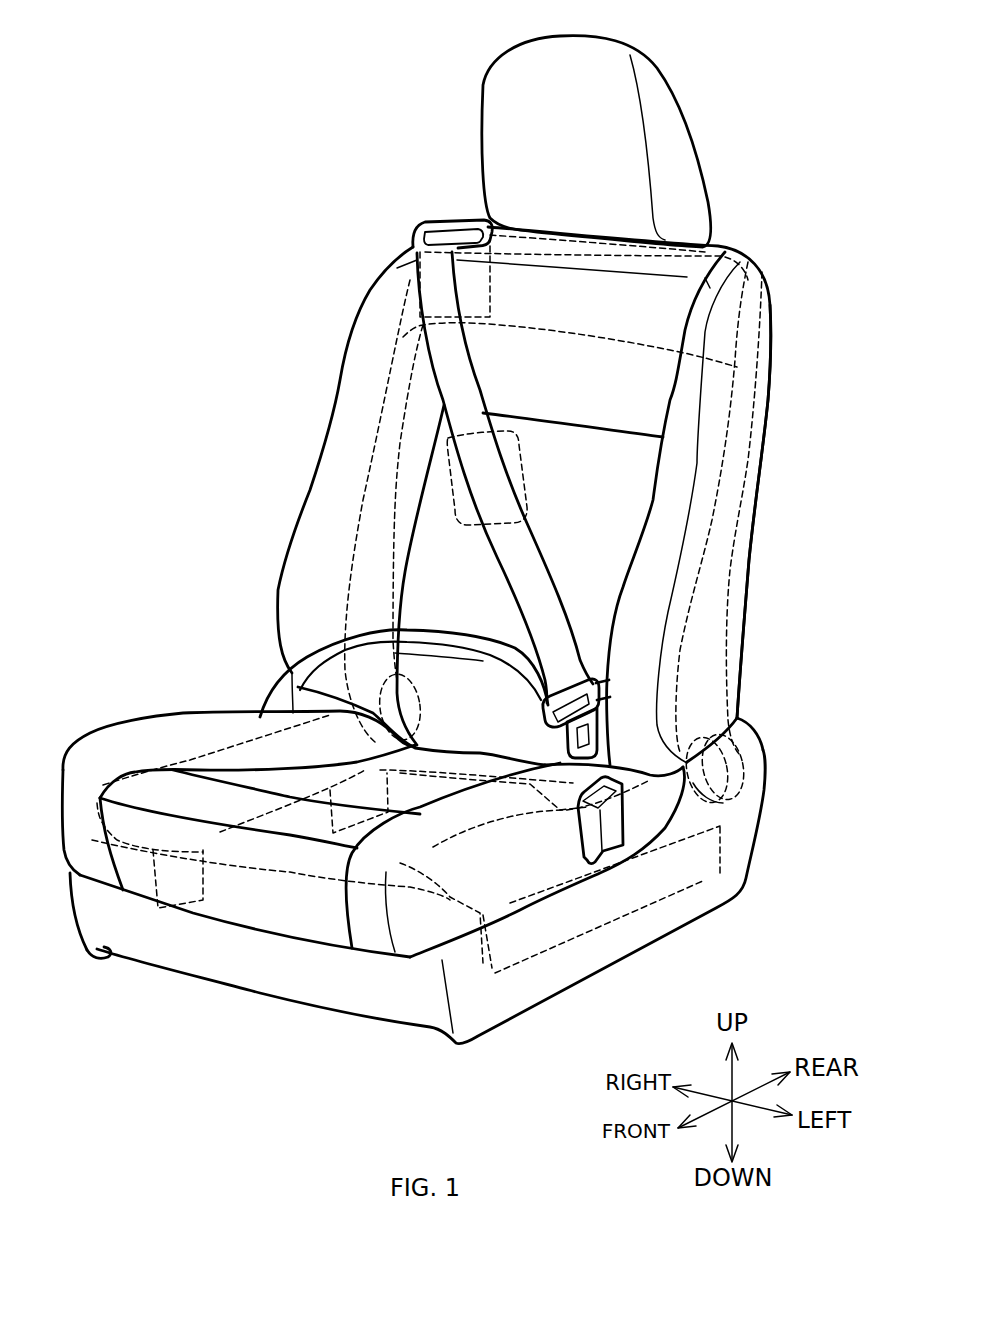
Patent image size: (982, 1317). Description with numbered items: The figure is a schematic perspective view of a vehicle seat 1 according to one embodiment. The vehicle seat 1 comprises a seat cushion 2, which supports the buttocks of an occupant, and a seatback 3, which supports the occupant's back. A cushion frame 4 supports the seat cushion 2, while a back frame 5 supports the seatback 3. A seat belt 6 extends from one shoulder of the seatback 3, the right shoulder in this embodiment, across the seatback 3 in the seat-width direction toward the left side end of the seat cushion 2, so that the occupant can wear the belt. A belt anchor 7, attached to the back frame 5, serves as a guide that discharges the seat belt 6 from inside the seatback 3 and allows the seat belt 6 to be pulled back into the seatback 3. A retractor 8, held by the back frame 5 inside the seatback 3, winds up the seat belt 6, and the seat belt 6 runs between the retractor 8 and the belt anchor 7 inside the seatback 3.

The vehicle seat 1 is at (313, 218).
The seat cushion 2 is at (208, 733).
The seatback 3 is at (387, 301).
The cushion frame 4 is at (455, 900).
The back frame 5 is at (770, 302).
The seat belt 6 is at (447, 377).
The belt anchor 7 is at (508, 220).
The retractor 8 is at (515, 440).